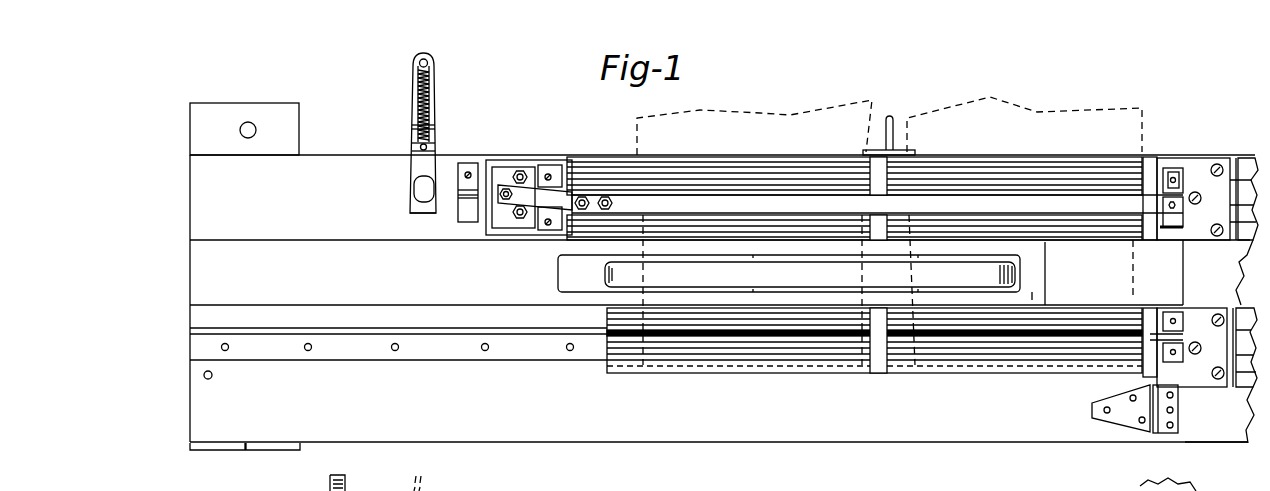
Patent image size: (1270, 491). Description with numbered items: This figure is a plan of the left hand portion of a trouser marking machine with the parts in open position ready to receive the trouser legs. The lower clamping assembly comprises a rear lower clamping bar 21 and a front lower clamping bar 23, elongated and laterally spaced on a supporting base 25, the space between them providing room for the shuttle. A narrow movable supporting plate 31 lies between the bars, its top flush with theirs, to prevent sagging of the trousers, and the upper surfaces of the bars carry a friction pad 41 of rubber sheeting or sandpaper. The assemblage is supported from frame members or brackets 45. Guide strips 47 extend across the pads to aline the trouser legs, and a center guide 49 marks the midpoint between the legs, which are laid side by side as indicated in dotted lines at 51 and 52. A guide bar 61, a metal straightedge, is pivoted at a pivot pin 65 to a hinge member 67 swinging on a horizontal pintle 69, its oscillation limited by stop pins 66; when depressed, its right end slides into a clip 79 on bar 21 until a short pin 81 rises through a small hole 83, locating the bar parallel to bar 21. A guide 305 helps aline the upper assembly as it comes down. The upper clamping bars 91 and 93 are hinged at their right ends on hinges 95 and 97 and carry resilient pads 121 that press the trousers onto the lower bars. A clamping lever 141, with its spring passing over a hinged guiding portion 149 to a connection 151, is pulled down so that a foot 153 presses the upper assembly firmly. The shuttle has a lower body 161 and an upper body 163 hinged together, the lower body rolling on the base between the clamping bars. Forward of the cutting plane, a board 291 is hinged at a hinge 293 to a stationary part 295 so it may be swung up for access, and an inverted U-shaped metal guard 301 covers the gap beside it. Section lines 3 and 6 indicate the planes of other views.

The section line 3 is at (558, 292).
The section line 6 is at (477, 267).
The rear lower clamping bar 21 is at (270, 230).
The front lower clamping bar 23 is at (265, 309).
The supporting base 25 is at (193, 259).
The movable supporting plate 31 is at (608, 272).
The friction pad 41 is at (690, 172).
The supporting bracket 45 is at (222, 110).
The guide strip 47 is at (874, 378).
The center guide 49 is at (891, 115).
The right hand trouser leg 51 is at (1100, 113).
The trouser leg 52 is at (828, 115).
The guide bar 61 is at (752, 210).
The pivot pin 65 is at (500, 188).
The stop pins 66 is at (520, 172).
The hinge member 67 is at (523, 226).
The hinge pintle 69 is at (540, 168).
The metal clip 79 is at (1175, 232).
The short pin 81 is at (1172, 201).
The small hole 83 is at (1182, 205).
The upper clamping bar 91 is at (1242, 158).
The upper clamping bar 93 is at (1240, 392).
The hinge 95 is at (1226, 160).
The hinge 97 is at (1222, 390).
The resilient pad 121 is at (1140, 486).
The clamping lever 141 is at (412, 186).
The hinged guiding portion 149 is at (433, 62).
The spring connection 151 is at (415, 147).
The downward foot 153 is at (410, 208).
The lower shuttle body 161 is at (1080, 296).
The upper shuttle body 163 is at (1190, 280).
The hinged board 291 is at (946, 432).
The hinge 293 is at (1157, 433).
The stationary part 295 is at (1214, 441).
The metal guard 301 is at (383, 330).
The guide 305 is at (462, 214).